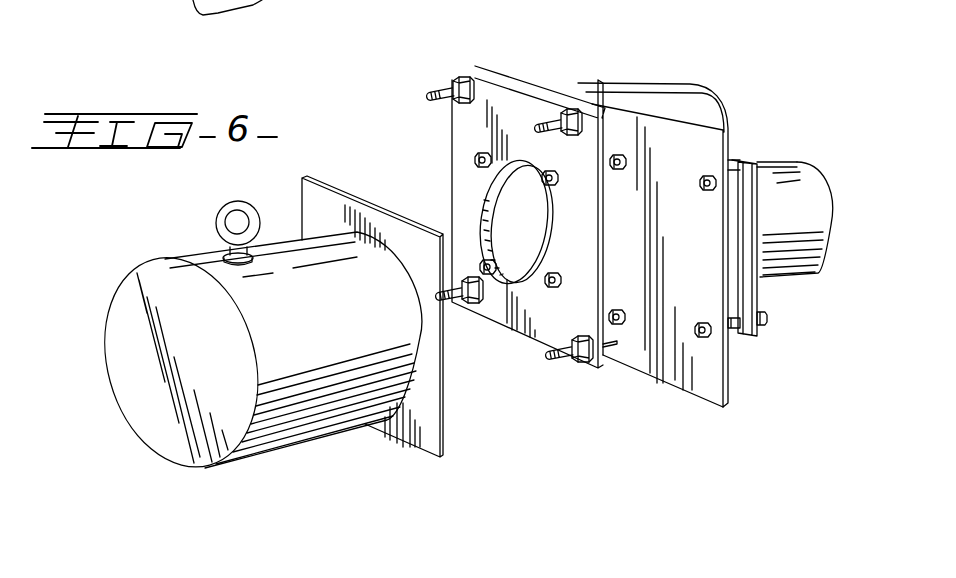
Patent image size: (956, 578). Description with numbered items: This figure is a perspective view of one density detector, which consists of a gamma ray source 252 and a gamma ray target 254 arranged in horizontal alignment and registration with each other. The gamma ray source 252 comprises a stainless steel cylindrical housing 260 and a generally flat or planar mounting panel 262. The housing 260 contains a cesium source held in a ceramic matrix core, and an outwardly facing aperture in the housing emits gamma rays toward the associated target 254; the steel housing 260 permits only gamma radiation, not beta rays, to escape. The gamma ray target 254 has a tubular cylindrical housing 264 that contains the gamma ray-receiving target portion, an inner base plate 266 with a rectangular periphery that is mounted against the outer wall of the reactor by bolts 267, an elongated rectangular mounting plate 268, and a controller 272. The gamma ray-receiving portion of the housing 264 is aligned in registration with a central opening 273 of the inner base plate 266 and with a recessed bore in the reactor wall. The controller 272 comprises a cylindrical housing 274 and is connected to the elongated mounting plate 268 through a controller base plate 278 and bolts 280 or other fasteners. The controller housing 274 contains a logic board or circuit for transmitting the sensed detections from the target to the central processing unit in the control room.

The gamma ray source 252 is at (304, 443).
The gamma ray target 254 is at (619, 84).
The cylindrical housing 260 is at (124, 283).
The mounting panel 262 is at (345, 193).
The tubular cylindrical housing 264 is at (691, 84).
The inner base plate 266 is at (464, 76).
The bolts 267 is at (430, 94).
The mounting plate 268 is at (523, 76).
The controller 272 is at (775, 162).
The central opening 273 is at (484, 194).
The cylindrical housing 274 is at (831, 232).
The controller base plate 278 is at (734, 326).
The bolts 280 is at (733, 330).